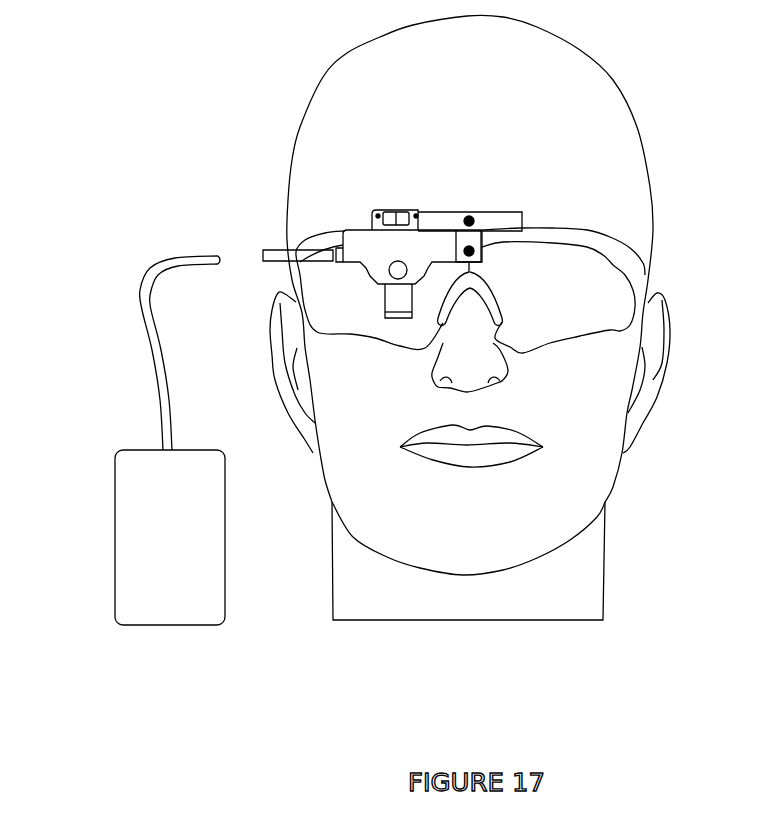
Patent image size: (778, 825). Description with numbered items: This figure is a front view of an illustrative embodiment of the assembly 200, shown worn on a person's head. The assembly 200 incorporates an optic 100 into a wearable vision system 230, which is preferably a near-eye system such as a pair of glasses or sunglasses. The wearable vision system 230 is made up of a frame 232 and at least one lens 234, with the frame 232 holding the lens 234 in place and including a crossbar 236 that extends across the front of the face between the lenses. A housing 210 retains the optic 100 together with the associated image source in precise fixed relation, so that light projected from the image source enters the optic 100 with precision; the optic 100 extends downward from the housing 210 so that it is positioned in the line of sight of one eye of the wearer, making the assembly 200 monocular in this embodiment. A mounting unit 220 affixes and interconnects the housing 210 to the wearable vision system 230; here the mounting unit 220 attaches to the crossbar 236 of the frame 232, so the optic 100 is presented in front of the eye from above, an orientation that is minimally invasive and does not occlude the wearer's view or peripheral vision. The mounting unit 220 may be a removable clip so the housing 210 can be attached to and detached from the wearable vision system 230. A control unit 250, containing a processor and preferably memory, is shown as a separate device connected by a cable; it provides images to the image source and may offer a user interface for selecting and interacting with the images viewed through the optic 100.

The optic 100 is at (398, 318).
The assembly 200 is at (322, 155).
The housing 210 is at (357, 232).
The mounting unit 220 is at (497, 216).
The wearable vision system 230 is at (605, 219).
The frame 232 is at (636, 242).
The lens 234 is at (607, 310).
The crossbar 236 is at (552, 228).
The control unit 250 is at (115, 517).